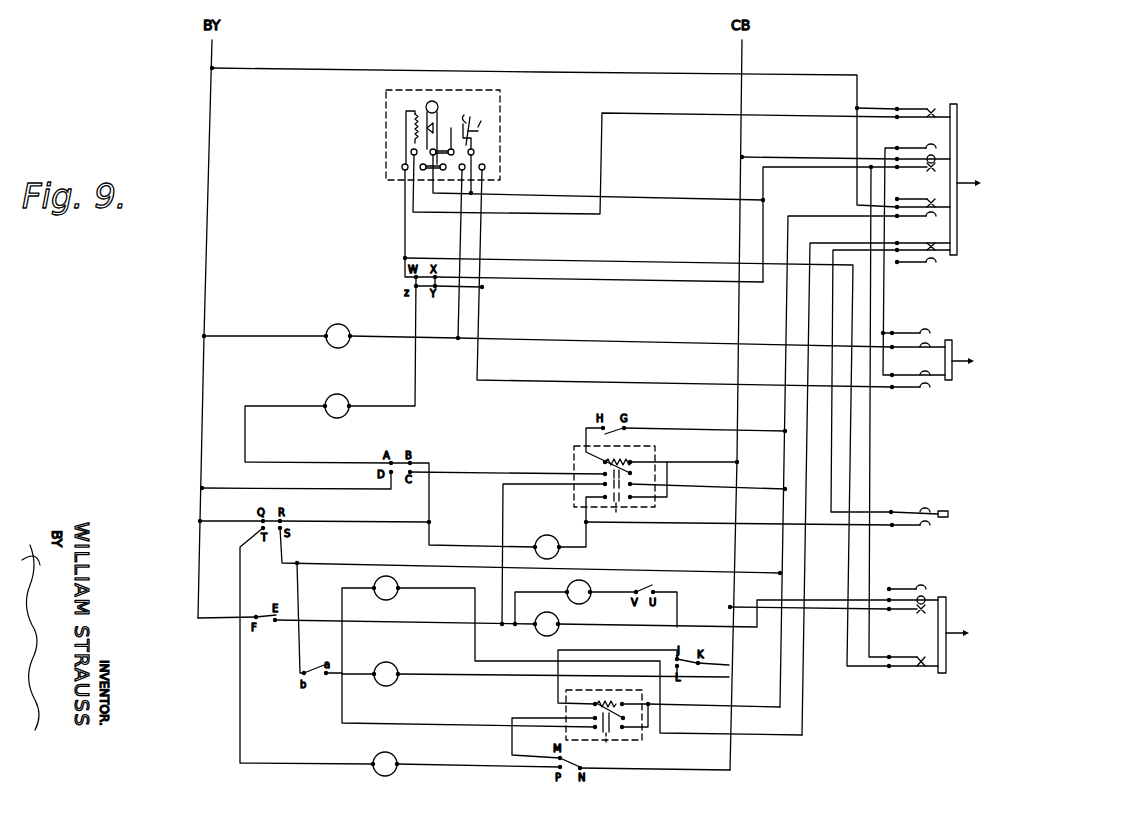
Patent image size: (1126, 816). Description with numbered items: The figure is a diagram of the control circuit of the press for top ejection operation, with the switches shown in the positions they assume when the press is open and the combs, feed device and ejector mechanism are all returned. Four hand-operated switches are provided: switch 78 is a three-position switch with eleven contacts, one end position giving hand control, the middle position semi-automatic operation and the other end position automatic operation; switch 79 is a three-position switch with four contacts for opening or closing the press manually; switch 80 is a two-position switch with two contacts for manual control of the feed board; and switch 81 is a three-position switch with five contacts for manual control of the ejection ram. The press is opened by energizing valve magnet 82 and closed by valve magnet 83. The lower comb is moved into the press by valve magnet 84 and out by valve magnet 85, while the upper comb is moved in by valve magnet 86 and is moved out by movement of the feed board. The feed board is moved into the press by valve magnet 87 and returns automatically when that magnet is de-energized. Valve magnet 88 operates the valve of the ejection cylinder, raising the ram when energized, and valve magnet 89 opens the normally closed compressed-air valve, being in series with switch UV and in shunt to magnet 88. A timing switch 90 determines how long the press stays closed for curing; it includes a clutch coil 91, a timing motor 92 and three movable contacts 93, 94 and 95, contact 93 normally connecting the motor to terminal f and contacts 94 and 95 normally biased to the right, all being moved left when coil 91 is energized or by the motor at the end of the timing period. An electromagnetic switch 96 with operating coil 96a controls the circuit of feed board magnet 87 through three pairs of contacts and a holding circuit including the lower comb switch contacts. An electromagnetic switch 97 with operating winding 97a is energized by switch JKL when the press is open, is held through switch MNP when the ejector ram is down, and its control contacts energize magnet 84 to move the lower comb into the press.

The three-position switch 78 is at (958, 118).
The three-position switch 79 is at (948, 340).
The two-position switch 80 is at (921, 516).
The three-position switch 81 is at (946, 597).
The valve magnet 82 is at (338, 324).
The valve magnet 83 is at (337, 394).
The valve magnet 84 is at (395, 598).
The valve magnet 85 is at (395, 684).
The valve magnet 86 is at (394, 774).
The valve magnet 87 is at (547, 535).
The valve magnet 88 is at (539, 634).
The valve magnet 89 is at (589, 602).
The timing switch 90 is at (446, 132).
The clutch coil 91 is at (412, 127).
The timing motor 92 is at (432, 101).
The movable switch contact 93 is at (433, 126).
The movable switch contact 94 is at (461, 126).
The movable switch contact 95 is at (478, 129).
The electromagnetic switch 96 is at (611, 469).
The operating coil 96a is at (632, 461).
The electromagnetic switch 97 is at (622, 708).
The operating winding 97a is at (600, 703).